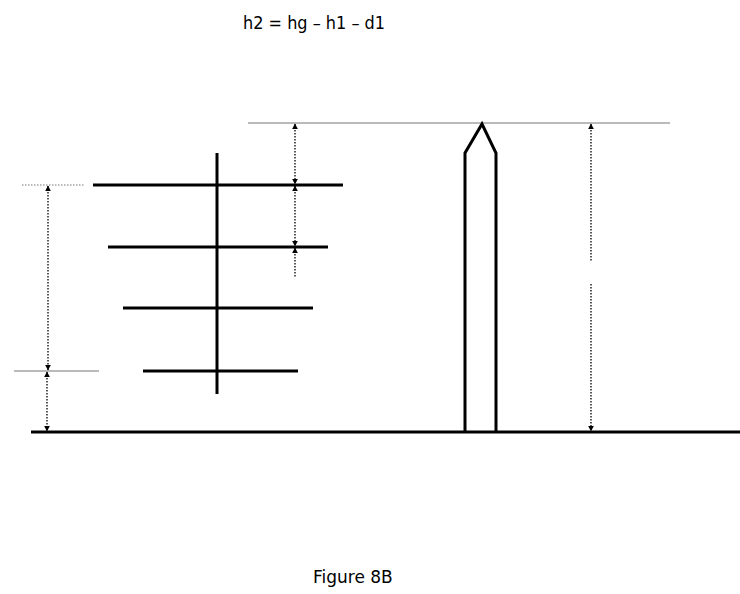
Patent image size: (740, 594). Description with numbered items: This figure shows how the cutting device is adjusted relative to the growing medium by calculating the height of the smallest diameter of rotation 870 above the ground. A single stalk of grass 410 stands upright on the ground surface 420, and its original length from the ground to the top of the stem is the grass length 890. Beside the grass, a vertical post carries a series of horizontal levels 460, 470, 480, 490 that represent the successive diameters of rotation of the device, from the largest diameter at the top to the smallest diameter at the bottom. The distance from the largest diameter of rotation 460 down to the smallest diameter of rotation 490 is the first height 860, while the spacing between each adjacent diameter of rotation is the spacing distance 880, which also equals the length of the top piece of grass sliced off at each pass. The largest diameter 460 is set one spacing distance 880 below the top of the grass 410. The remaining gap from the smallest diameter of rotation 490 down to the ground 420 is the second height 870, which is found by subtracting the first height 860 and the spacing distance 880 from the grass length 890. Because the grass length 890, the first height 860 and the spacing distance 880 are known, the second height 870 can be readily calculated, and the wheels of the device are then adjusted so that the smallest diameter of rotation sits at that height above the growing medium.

The grass 410 is at (463, 173).
The ground surface 420 is at (332, 430).
The first horizontal conductor arm 460 is at (143, 184).
The second horizontal conductor arm 470 is at (140, 246).
The third horizontal conductor arm 480 is at (135, 307).
The fourth horizontal conductor arm 490 is at (148, 370).
The distance h1 860 is at (58, 250).
The distance h2 870 is at (63, 399).
The distance d1 880 is at (306, 218).
The grass length hg 890 is at (603, 265).